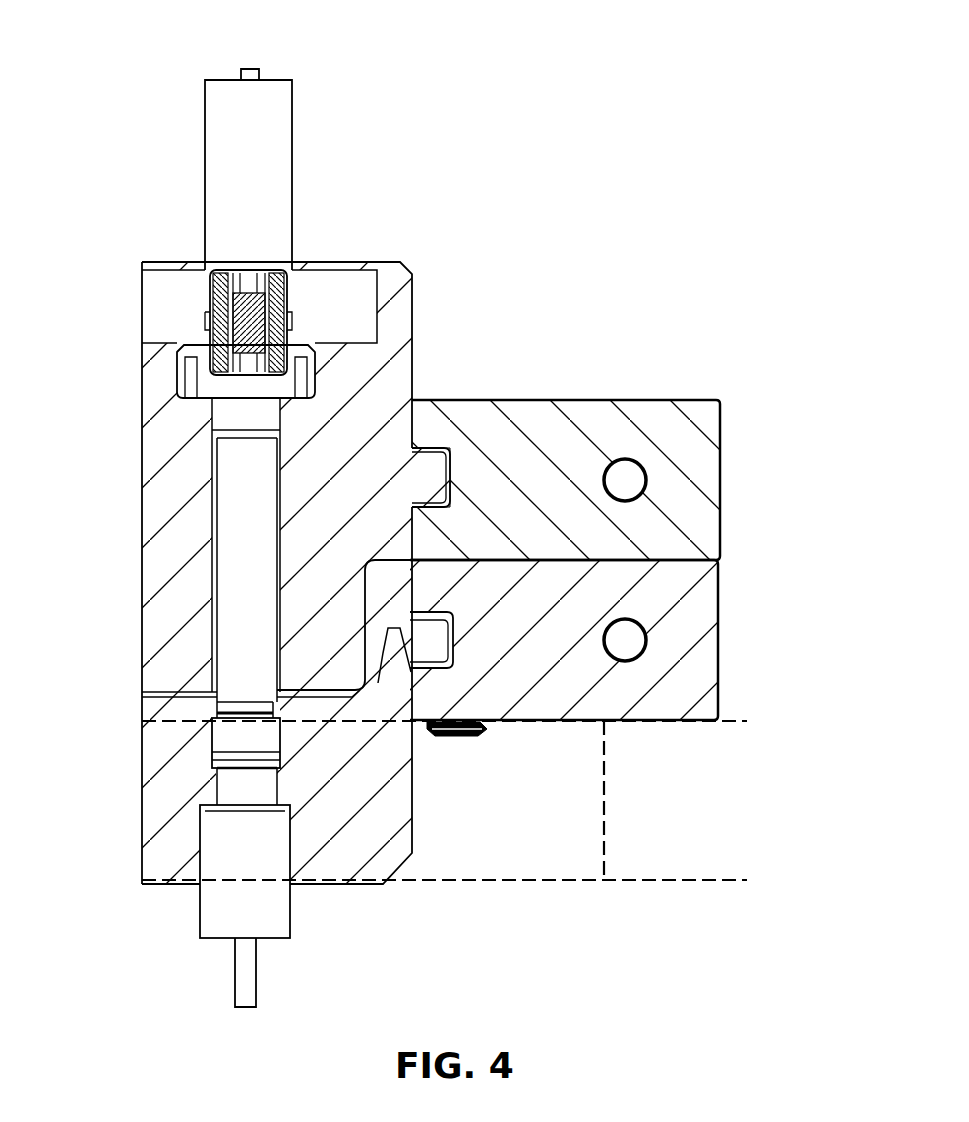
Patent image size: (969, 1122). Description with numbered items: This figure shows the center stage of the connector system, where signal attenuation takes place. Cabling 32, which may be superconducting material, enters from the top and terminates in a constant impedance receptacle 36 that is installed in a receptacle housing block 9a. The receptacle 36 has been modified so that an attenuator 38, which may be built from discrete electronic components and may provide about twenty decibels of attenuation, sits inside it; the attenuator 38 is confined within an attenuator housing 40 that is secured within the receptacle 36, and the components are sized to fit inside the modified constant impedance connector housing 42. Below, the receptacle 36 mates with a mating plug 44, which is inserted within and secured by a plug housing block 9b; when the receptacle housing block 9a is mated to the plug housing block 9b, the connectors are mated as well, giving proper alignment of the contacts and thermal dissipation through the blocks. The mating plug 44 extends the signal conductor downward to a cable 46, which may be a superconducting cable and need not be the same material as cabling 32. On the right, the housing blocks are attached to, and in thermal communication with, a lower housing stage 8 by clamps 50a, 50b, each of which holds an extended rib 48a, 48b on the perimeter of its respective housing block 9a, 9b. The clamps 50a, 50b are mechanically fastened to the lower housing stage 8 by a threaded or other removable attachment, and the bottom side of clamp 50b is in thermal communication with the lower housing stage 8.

The lower housing stage 8 is at (707, 800).
The receptacle housing block 9a is at (405, 312).
The plug housing block 9b is at (363, 850).
The cabling 32 is at (262, 62).
The constant impedance receptacle 36 is at (184, 316).
The attenuator 38 is at (210, 322).
The attenuator housing 40 is at (240, 321).
The connector housing 42 is at (276, 210).
The mating plug 44 is at (232, 735).
The cable 46 is at (245, 967).
The extended rib 48a is at (417, 473).
The extended rib 48b is at (437, 635).
The clamp 50a is at (723, 438).
The clamp 50b is at (722, 606).